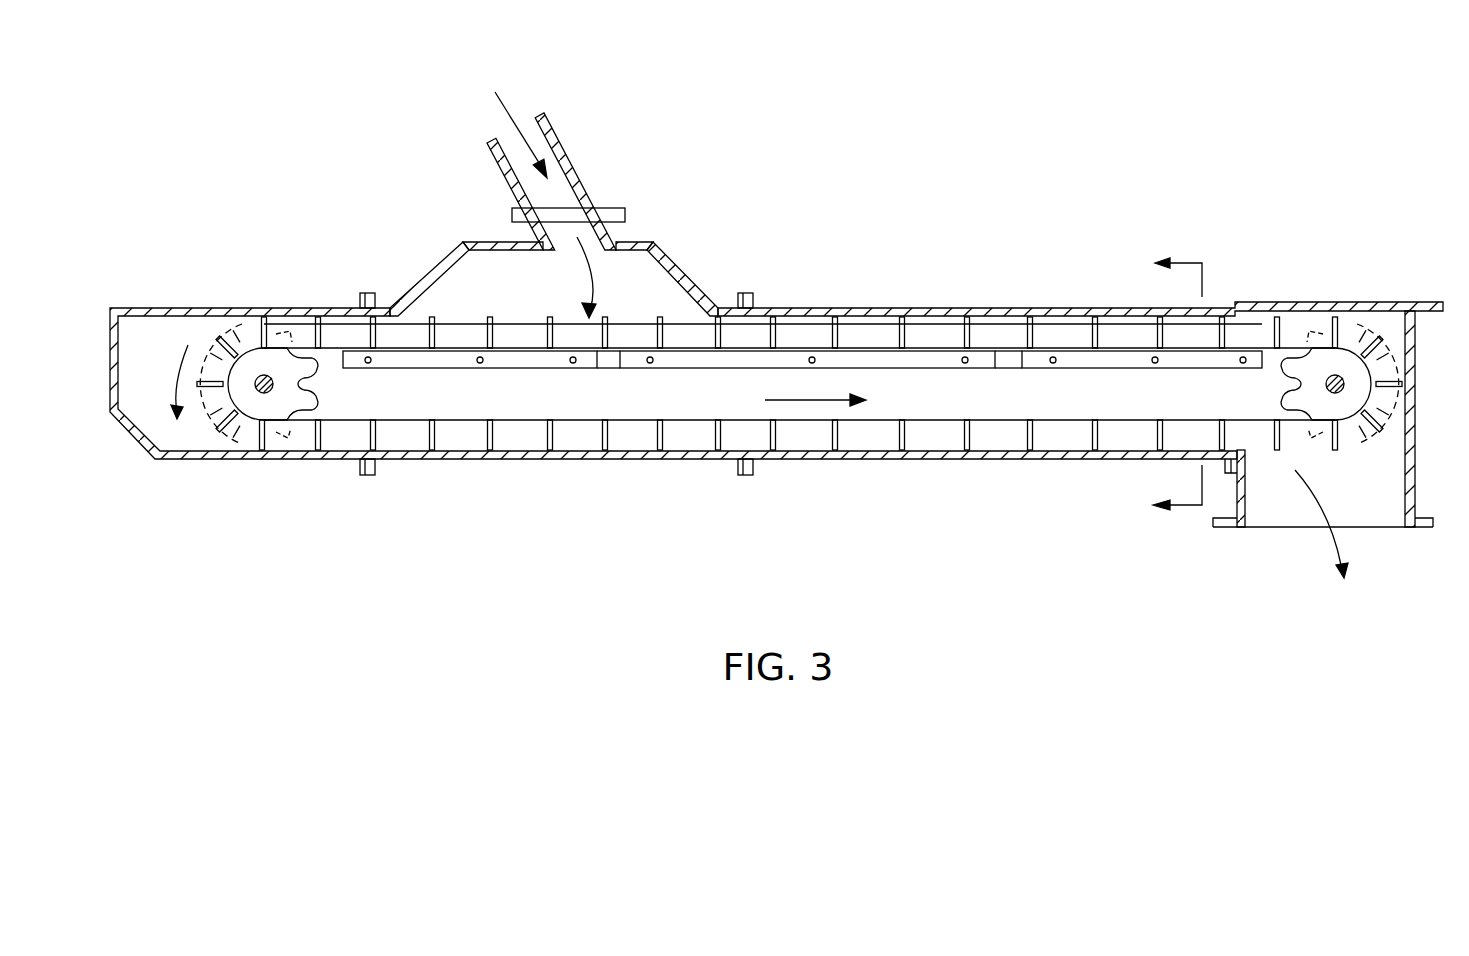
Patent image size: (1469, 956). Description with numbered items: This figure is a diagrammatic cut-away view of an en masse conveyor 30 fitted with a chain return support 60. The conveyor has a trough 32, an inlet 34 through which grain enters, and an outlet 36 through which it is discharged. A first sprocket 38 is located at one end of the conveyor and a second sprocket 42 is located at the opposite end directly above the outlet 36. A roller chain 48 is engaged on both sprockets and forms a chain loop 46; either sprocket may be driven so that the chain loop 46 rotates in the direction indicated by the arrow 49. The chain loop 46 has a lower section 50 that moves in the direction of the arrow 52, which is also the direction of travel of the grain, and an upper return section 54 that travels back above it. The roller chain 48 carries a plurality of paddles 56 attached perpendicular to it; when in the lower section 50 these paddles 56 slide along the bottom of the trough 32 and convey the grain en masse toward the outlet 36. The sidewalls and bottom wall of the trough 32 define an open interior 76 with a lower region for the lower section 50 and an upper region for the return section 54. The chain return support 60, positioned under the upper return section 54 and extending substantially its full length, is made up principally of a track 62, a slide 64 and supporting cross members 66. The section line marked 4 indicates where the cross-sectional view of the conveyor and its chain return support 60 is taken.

The section line 4- 4 is at (1177, 383).
The en masse conveyor 30 is at (938, 241).
The trough 32 is at (978, 458).
The inlet 34 is at (530, 118).
The outlet 36 is at (1415, 488).
The first sprocket 38 is at (255, 366).
The second sprocket 42 is at (1340, 360).
The chain loop 46 is at (1260, 335).
The roller chain 48 is at (1133, 333).
The arrow indicating direction of rotation 49 is at (176, 364).
The lower section 50 is at (692, 432).
The arrow indicating direction of travel 52 is at (810, 402).
The upper return section 54 is at (1000, 335).
The paddles 56 is at (900, 340).
The chain return support 60 is at (737, 360).
The track 62 is at (1106, 360).
The slide 64 is at (1045, 345).
The supporting cross members 66 is at (811, 356).
The open interior 76 is at (327, 358).